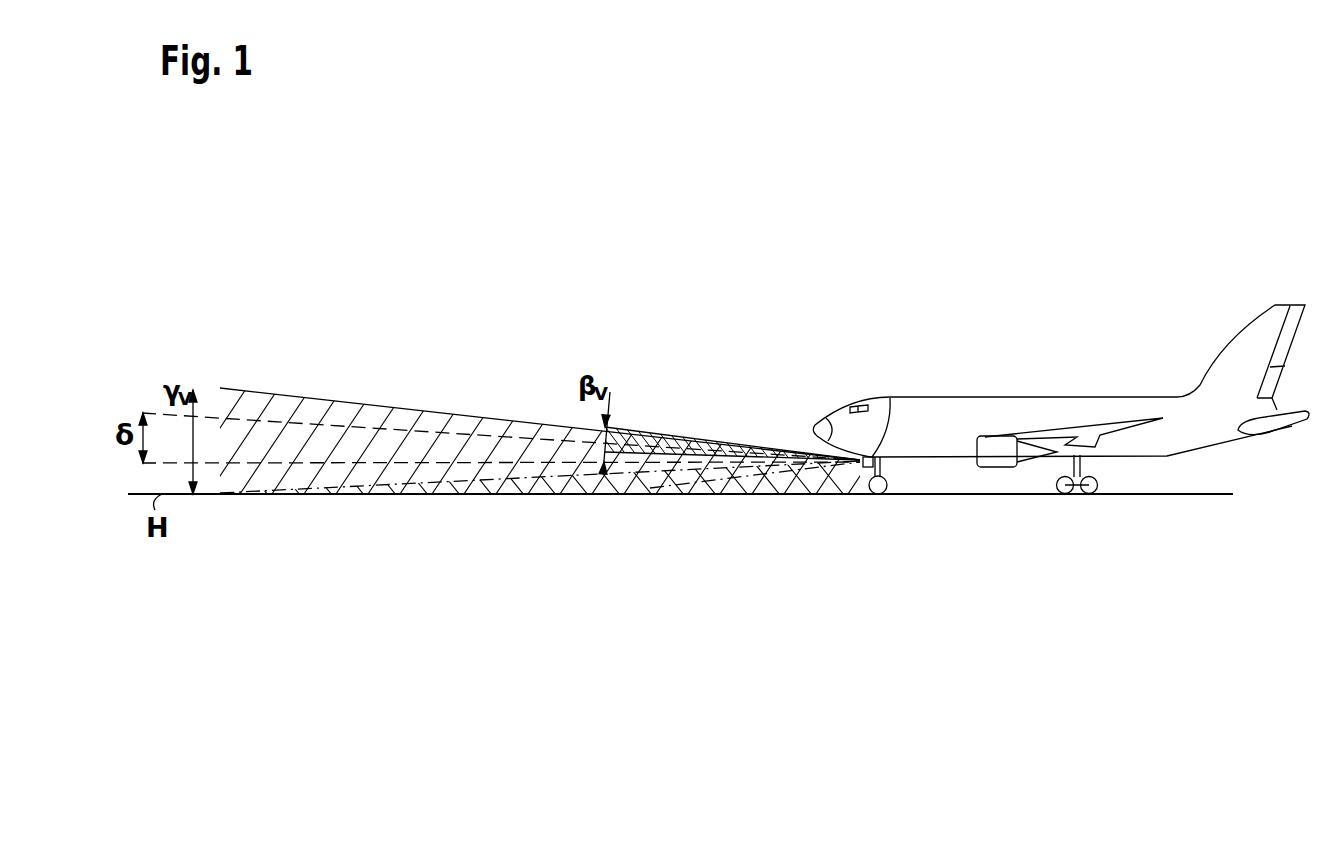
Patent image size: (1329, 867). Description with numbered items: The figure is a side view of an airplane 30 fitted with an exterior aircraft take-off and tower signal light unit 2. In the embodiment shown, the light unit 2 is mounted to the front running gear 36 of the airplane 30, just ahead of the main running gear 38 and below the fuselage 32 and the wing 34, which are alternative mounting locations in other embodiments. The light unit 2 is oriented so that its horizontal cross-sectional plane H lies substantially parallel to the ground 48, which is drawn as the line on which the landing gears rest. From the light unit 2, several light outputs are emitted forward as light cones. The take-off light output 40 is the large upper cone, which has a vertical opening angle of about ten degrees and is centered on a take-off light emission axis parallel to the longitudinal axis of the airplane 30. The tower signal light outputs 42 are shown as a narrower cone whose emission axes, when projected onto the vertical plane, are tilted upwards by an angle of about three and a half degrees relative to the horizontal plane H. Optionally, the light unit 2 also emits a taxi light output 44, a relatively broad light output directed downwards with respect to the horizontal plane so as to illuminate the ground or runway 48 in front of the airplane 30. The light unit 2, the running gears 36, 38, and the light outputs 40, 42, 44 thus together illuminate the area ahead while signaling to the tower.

The exterior aircraft take-off and tower signal light unit 2 is at (870, 452).
The airplane 30 is at (1061, 425).
The fuselage 32 is at (985, 403).
The wing 34 is at (1117, 427).
The front running gear 36 is at (900, 494).
The main running gear 38 is at (1048, 494).
The take-off light output 40 is at (354, 385).
The tower signal light output 42 is at (712, 420).
The taxi light output 44 is at (692, 495).
The ground 48 is at (801, 495).